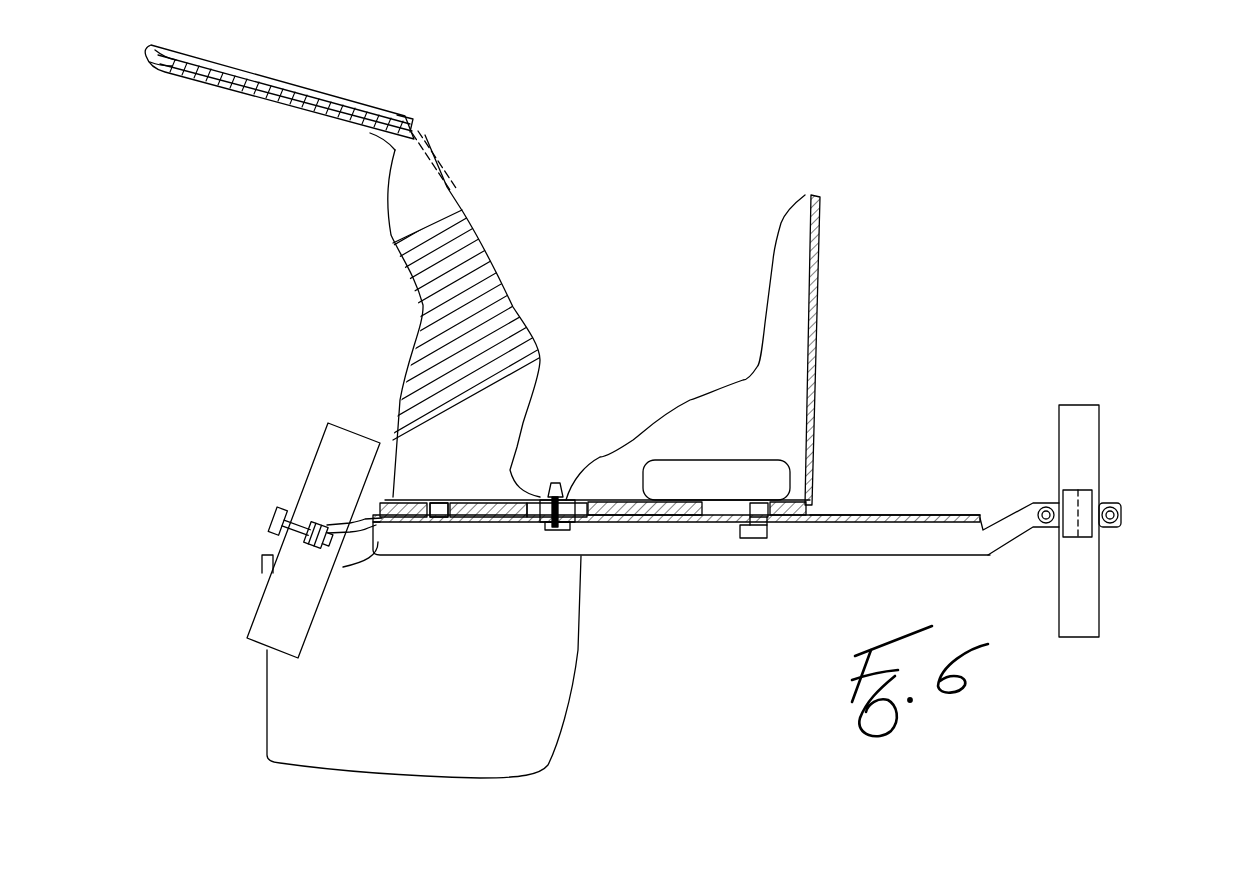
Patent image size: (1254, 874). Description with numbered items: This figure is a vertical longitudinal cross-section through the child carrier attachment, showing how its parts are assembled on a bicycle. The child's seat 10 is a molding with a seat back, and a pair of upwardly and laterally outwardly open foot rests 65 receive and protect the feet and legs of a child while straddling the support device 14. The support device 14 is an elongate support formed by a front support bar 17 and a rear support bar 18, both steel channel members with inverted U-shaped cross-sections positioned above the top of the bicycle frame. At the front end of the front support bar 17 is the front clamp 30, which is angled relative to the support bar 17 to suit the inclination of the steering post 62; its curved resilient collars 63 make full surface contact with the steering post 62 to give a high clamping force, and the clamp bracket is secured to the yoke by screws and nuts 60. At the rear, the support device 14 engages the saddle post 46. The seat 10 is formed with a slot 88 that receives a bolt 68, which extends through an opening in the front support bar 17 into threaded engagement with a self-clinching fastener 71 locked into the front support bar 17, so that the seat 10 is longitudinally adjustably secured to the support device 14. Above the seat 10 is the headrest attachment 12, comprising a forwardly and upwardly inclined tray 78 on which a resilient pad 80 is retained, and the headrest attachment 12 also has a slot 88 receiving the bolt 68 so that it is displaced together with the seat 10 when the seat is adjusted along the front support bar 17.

The child's seat 10 is at (848, 392).
The headrest attachment 12 is at (516, 222).
The support device 14 is at (716, 582).
The front support bar 17 is at (517, 540).
The rear support bar 18 is at (863, 540).
The front clamp 30 is at (241, 480).
The saddle post 46 is at (1089, 471).
The nut 60 is at (305, 514).
The steering post 62 is at (277, 612).
The collar 63 is at (330, 527).
The foot rest 65 is at (470, 732).
The bolt 68 is at (548, 494).
The self-clinching fastener 71 is at (582, 557).
The tray 78 is at (247, 91).
The resilient pad 80 is at (317, 103).
The slot 88 is at (576, 500).